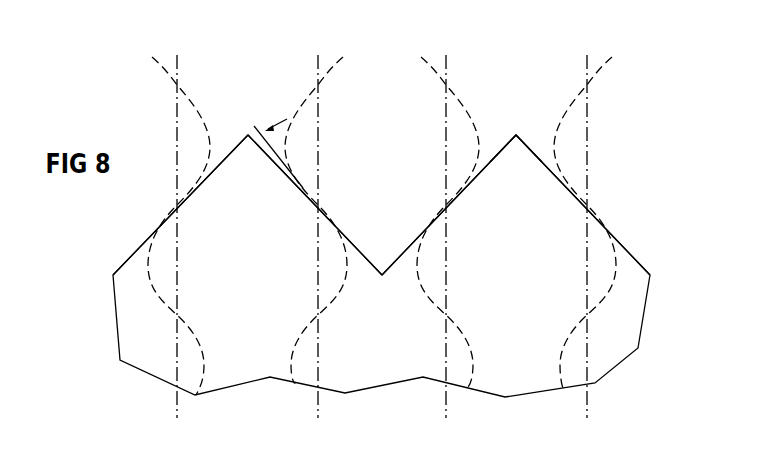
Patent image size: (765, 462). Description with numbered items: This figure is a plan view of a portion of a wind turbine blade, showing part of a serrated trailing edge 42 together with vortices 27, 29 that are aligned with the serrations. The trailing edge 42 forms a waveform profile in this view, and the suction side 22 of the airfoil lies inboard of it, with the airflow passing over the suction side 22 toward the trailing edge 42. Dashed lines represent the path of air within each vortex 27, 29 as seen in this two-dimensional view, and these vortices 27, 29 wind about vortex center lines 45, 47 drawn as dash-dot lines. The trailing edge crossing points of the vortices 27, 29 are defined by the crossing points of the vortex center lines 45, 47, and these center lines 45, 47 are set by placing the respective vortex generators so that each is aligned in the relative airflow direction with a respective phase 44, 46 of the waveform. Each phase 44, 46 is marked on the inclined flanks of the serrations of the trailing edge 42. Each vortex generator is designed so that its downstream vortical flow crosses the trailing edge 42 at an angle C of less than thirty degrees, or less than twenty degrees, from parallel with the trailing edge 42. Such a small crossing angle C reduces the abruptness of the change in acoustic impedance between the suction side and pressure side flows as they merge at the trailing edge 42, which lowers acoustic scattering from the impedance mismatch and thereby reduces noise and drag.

The suction side 22 is at (506, 251).
The trailing edge 42 is at (502, 148).
The phase of the waveform 44 is at (178, 207).
The phase of the waveform 46 is at (318, 207).
The vortex center line 45 is at (446, 263).
The vortex center line 47 is at (318, 263).
The vortex 27 is at (465, 343).
The vortex 29 is at (300, 343).
The crossing angle C is at (247, 149).